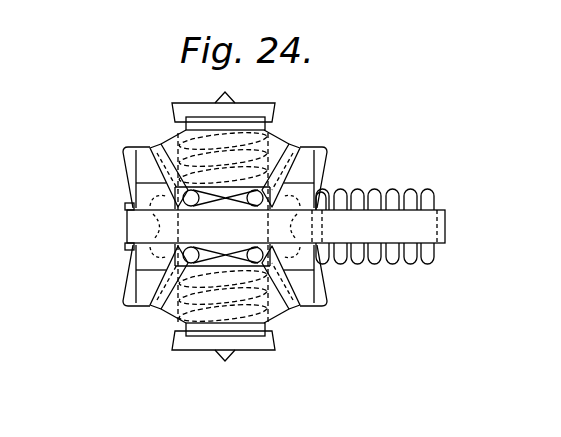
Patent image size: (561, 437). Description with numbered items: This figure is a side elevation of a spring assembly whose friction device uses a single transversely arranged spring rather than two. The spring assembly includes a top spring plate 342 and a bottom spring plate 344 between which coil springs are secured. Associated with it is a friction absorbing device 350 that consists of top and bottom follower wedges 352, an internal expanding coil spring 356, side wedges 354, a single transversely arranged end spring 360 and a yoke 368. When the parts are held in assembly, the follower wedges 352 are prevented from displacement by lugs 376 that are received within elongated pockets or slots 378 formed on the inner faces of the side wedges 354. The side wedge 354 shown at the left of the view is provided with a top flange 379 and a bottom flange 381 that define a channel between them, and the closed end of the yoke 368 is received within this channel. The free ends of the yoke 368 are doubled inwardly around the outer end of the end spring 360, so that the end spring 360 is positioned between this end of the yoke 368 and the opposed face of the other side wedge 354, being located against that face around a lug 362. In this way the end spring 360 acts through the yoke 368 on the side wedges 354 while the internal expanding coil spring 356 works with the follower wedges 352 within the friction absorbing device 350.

The top spring plate 342 is at (267, 113).
The bottom spring plate 344 is at (267, 343).
The friction absorbing device 350 is at (280, 149).
The follower wedges 352 is at (172, 152).
The side wedges 354 is at (157, 172).
The internal expanding coil spring 356 is at (195, 300).
The end spring 360 is at (386, 262).
The lug 362 is at (330, 192).
The yoke 368 is at (127, 229).
The lugs 376 is at (158, 260).
The elongated pockets or slots 378 is at (158, 227).
The top flange 379 is at (126, 203).
The bottom flange 381 is at (126, 247).